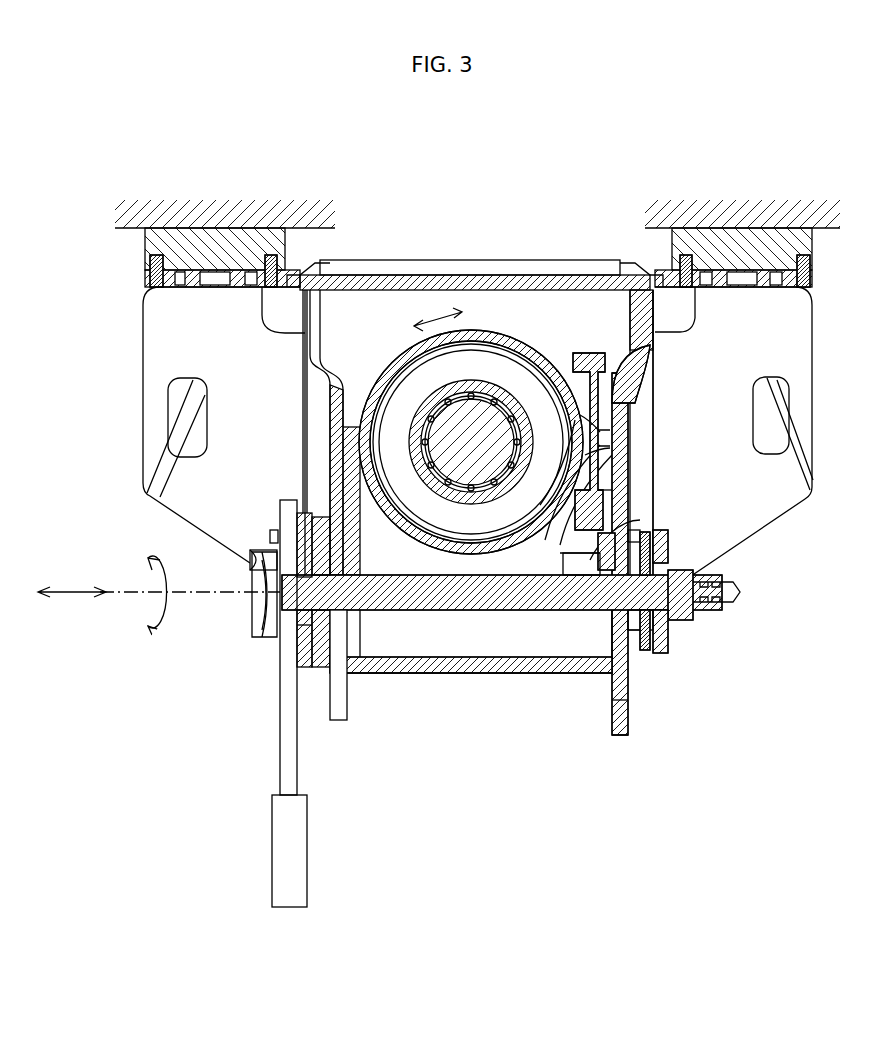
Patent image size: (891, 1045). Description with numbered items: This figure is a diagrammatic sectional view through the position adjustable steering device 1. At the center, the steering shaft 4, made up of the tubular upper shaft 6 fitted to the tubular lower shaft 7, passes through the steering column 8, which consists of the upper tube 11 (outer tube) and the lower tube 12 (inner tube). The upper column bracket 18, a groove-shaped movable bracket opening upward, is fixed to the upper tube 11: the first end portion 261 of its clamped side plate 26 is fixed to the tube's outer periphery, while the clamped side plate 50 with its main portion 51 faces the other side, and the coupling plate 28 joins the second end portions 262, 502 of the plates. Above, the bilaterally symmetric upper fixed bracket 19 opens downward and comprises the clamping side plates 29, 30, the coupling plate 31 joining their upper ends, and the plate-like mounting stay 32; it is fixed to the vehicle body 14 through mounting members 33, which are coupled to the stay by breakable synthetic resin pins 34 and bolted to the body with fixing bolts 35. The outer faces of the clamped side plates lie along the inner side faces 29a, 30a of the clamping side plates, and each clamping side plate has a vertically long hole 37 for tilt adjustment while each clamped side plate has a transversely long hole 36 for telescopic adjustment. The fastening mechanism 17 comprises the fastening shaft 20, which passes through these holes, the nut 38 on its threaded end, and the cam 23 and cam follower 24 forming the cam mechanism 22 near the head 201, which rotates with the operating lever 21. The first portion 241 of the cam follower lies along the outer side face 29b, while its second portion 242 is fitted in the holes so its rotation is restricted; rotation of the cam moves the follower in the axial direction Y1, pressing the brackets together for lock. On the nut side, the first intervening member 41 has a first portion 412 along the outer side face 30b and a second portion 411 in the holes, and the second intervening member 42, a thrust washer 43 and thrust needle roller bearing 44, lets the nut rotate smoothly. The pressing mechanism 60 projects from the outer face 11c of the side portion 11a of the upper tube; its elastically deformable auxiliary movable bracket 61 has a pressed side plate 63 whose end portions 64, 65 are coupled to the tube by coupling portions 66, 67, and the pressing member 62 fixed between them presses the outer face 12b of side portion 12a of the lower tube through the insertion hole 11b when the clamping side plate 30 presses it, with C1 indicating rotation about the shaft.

The position adjustable steering device 1 is at (544, 240).
The steering shaft 4 is at (520, 227).
The upper shaft 6 is at (468, 383).
The lower shaft 7 is at (490, 437).
The steering column 8 is at (340, 213).
The upper tube 11 is at (400, 355).
The one side portion of the upper tube 11a is at (537, 397).
The insertion hole 11b is at (615, 463).
The outer face of the one side portion of the upper tube 11c is at (575, 375).
The lower tube 12 is at (372, 385).
The one side portion of the lower tube 12a is at (545, 532).
The outer face of the one side portion of the lower tube 12b is at (592, 427).
The vehicle body 14 is at (216, 212).
The fastening mechanism 17 is at (240, 630).
The upper column bracket 18 is at (490, 676).
The upper fixed bracket 19 is at (568, 275).
The fastening shaft 20 is at (465, 614).
The operating lever 21 is at (280, 770).
The cam mechanism 22 is at (220, 695).
The cam 23 is at (305, 668).
The cam follower 24 is at (292, 700).
The clamped side plate 26 is at (362, 556).
The coupling plate 28 is at (420, 676).
The clamping side plate 29 is at (340, 416).
The inner side face of the clamping side plate 29a is at (345, 386).
The outer side face of the clamping side plate 29b is at (330, 480).
The clamping side plate 30 is at (620, 412).
The inner side face of the clamping side plate 30a is at (616, 732).
The outer side face of the clamping side plate 30b is at (623, 402).
The coupling plate 31 is at (441, 278).
The mounting stay 32 is at (628, 266).
The mounting member 33 is at (150, 248).
The synthetic resin pin 34 is at (155, 268).
The fixing bolt 35 is at (216, 284).
The transversely long hole 36 is at (386, 640).
The vertically long hole 37 is at (280, 546).
The nut 38 is at (690, 614).
The first intervening member 41 is at (657, 656).
The second intervening member 42 is at (800, 548).
The thrust washer 43 is at (650, 548).
The thrust needle roller bearing 44 is at (650, 566).
The clamped side plate 50 is at (583, 565).
The main portion 51 is at (567, 555).
The pressing mechanism 60 is at (660, 340).
The auxiliary movable bracket 61 is at (616, 474).
The pressing member 62 is at (593, 448).
The pressed side plate 63 is at (606, 438).
The end portion of the pressed side plate 64 is at (655, 364).
The end portion of the pressed side plate 65 is at (611, 488).
The coupling portion 66 is at (604, 358).
The coupling portion 67 is at (600, 547).
The head 201 is at (260, 630).
The first portion of the cam follower 241 is at (305, 640).
The second portion of the cam follower 242 is at (342, 702).
The first end portion of the clamped side plate 261 is at (348, 437).
The second end portion of the clamped side plate 262 is at (360, 665).
The second portion of the first intervening member 411 is at (622, 642).
The first portion of the first intervening member 412 is at (661, 645).
The second end portion of the clamped side plate 502 is at (626, 702).
The rotation direction C1 is at (142, 588).
The axial direction of the fastening shaft Y1 is at (60, 597).